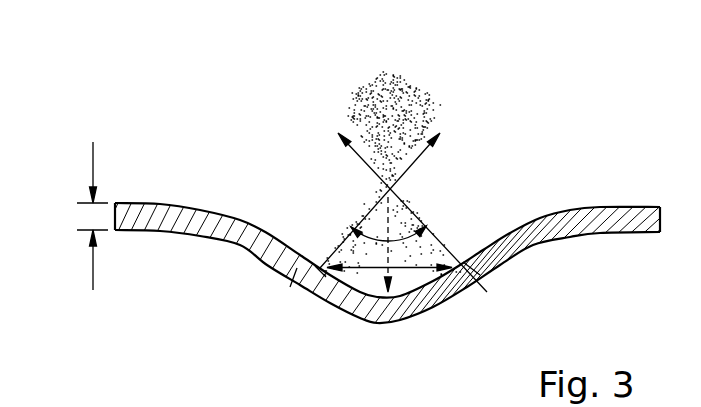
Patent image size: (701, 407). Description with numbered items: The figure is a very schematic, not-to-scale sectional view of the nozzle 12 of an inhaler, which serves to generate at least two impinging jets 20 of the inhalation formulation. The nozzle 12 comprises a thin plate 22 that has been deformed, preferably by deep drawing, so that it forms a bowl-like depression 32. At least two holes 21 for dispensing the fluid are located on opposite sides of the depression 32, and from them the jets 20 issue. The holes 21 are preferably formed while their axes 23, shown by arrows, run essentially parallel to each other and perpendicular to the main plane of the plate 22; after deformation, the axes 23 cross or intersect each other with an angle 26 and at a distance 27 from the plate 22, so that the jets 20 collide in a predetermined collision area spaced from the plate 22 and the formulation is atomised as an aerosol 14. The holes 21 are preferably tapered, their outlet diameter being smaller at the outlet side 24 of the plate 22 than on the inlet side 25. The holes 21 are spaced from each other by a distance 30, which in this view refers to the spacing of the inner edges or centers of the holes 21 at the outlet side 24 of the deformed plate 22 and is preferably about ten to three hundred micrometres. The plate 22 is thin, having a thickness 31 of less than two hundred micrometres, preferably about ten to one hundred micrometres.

The nozzle 12 is at (184, 163).
The aerosol 14 is at (420, 100).
The jets 20 is at (355, 207).
The holes 21 is at (290, 287).
The plate 22 is at (650, 207).
The axes 23 is at (363, 160).
The outlet side 24 is at (585, 206).
The inlet side 25 is at (607, 236).
The angle 26 is at (385, 241).
The distance 27 is at (388, 243).
The distance 30 is at (450, 304).
The thickness 31 is at (88, 217).
The depression 32 is at (322, 272).